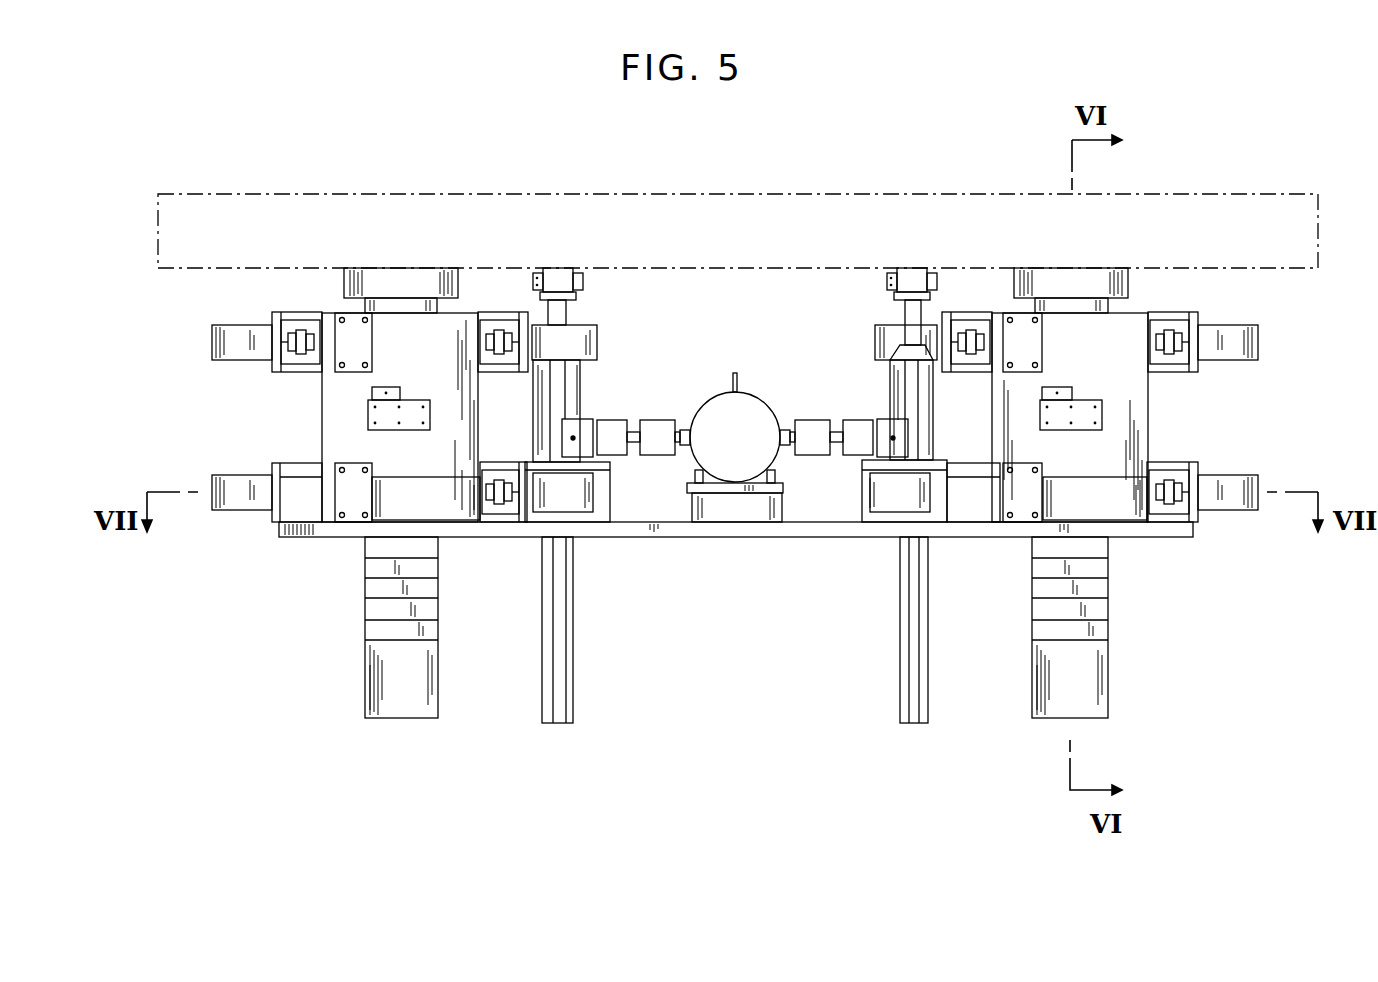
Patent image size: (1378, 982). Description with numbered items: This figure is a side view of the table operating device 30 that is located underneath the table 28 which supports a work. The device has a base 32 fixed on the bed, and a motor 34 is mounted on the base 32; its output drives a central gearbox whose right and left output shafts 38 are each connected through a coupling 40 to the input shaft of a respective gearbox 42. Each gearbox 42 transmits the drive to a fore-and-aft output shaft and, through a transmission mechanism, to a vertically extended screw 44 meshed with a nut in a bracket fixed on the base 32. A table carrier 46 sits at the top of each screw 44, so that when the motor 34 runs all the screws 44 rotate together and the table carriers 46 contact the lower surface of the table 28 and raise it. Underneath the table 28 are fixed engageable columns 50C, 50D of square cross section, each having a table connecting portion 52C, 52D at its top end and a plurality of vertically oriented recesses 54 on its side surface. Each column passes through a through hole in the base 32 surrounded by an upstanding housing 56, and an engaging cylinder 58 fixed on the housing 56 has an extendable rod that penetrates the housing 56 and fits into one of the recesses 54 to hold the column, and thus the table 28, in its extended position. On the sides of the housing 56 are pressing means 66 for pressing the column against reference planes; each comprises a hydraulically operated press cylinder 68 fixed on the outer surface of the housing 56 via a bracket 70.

The table 28 is at (619, 192).
The table operating device 30 is at (731, 727).
The base 32 is at (740, 532).
The motor 34 is at (755, 418).
The output shaft 38 is at (683, 433).
The coupling 40 is at (660, 445).
The gearbox 42 is at (607, 493).
The screw 44 is at (566, 320).
The table carrier 46 is at (561, 282).
The engageable column 50C is at (402, 697).
The engageable column 50D is at (1085, 703).
The table connecting portion 52C is at (414, 278).
The table connecting portion 52D is at (1076, 278).
The recess 54 is at (378, 602).
The housing 56 is at (342, 435).
The engaging cylinder 58 is at (415, 415).
The second pressing means 66 is at (206, 324).
The press cylinder 68 is at (585, 345).
The bracket 70 is at (297, 367).